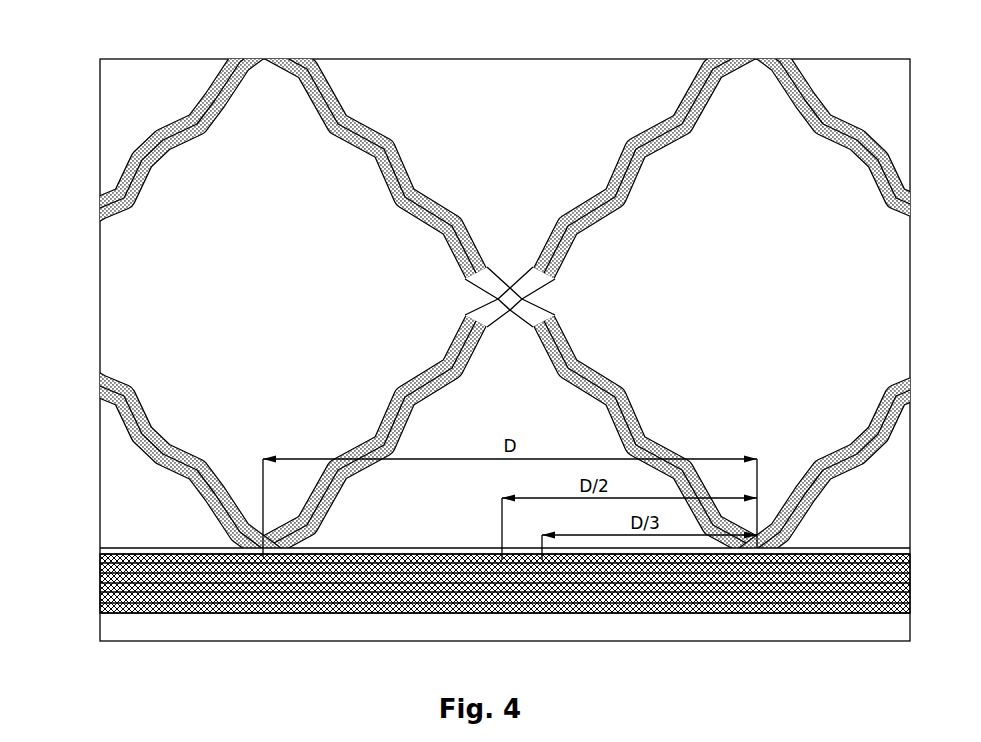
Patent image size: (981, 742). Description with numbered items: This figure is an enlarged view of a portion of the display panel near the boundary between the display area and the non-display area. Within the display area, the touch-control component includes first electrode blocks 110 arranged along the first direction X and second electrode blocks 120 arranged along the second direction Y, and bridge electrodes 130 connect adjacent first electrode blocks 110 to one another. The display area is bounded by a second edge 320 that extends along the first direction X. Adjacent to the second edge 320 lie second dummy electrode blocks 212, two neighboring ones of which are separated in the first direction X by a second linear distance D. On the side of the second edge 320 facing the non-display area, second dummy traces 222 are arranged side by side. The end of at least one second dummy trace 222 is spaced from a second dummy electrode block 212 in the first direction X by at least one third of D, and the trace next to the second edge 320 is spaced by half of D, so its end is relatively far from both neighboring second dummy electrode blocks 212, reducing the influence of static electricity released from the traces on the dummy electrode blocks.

The first electrode block 110 is at (118, 305).
The second electrode block 120 is at (510, 344).
The bridge electrode 130 is at (497, 299).
The second dummy electrode block 212 is at (262, 552).
The second dummy trace 222 is at (410, 614).
The second edge 320 is at (417, 547).